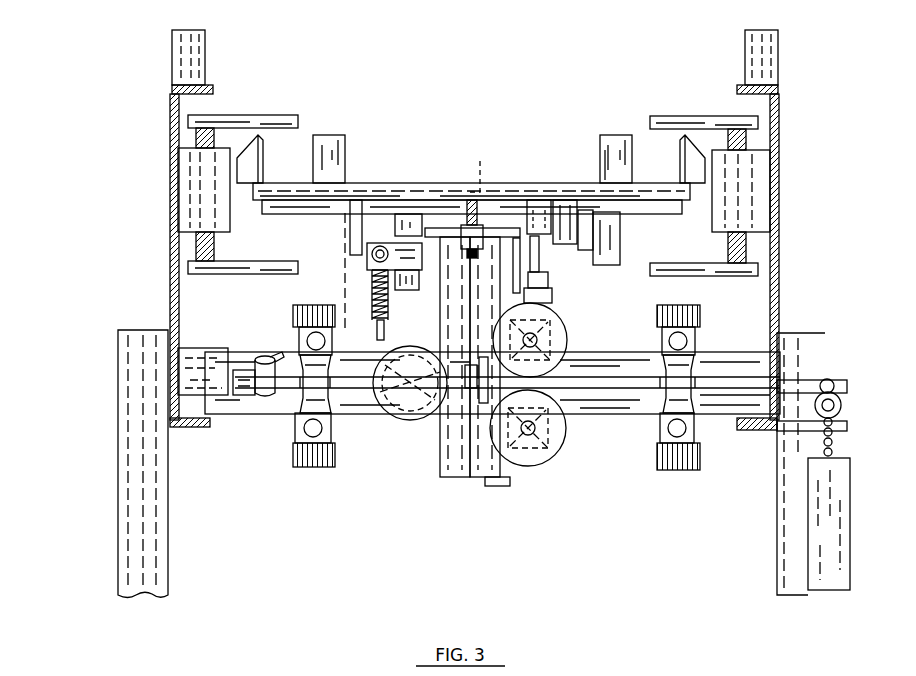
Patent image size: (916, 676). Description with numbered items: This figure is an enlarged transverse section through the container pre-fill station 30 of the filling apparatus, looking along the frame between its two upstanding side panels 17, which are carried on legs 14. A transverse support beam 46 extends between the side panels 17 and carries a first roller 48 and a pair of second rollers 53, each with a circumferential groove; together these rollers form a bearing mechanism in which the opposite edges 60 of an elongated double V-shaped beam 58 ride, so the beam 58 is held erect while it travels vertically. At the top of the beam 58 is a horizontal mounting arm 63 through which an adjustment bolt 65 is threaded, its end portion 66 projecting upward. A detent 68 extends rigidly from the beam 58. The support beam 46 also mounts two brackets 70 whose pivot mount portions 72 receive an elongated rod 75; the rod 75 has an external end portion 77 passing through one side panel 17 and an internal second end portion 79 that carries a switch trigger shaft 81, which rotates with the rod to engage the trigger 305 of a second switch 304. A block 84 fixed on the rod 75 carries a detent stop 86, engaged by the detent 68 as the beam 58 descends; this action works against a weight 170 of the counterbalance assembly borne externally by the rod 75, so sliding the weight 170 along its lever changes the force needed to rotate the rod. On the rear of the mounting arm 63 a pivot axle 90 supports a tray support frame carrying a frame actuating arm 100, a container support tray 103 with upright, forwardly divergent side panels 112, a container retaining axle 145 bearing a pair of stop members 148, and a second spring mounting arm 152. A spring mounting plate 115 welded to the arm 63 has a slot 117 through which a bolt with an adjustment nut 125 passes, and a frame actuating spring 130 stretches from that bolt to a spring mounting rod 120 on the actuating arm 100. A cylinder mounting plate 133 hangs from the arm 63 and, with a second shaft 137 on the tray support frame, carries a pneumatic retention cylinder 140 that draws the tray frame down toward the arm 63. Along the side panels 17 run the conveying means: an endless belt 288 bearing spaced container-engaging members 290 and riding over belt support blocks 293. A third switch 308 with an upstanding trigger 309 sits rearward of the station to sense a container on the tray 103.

The legs 14 is at (137, 388).
The side panels 17 is at (170, 172).
The pre-fill station 30 is at (448, 183).
The transverse support beam 46 is at (587, 410).
The first roller 48 is at (410, 420).
The second rollers 53 is at (567, 333).
The double V-shaped beam 58 is at (442, 465).
The opposite edges 60 is at (445, 438).
The mounting arm 63 is at (520, 253).
The adjustment bolt 65 is at (482, 217).
The end portion 66 is at (478, 190).
The detent 68 is at (467, 337).
The brackets 70 is at (300, 452).
The pivot mount portion 72 is at (305, 403).
The rod 75 is at (755, 385).
The external end portion 77 is at (845, 383).
The second end portion 79 is at (243, 397).
The switch trigger shaft 81 is at (267, 358).
The block 84 is at (477, 393).
The detent stop 86 is at (467, 373).
The pivot axle 90 is at (348, 240).
The frame actuating arm 100 is at (335, 313).
The container support tray 103 is at (263, 185).
The side panels 112 is at (684, 150).
The spring mounting plate 115 is at (372, 277).
The slot 117 is at (368, 247).
The spring mounting rod 120 is at (385, 337).
The adjustment nut 125 is at (372, 256).
The frame actuating spring 130 is at (392, 307).
The cylinder mounting plate 133 is at (503, 483).
The second shaft 137 is at (533, 217).
The retention cylinder 140 is at (553, 297).
The container retaining axle 145 is at (358, 212).
The stop members 148 is at (327, 150).
The second spring mounting arm 152 is at (410, 222).
The weight 170 is at (838, 488).
The endless belt 288 is at (217, 139).
The container-engaging members 290 is at (247, 127).
The belt support blocks 293 is at (185, 205).
The second switch 304 is at (208, 357).
The trigger 305 is at (278, 355).
The third switch 308 is at (622, 227).
The trigger 309 is at (608, 168).